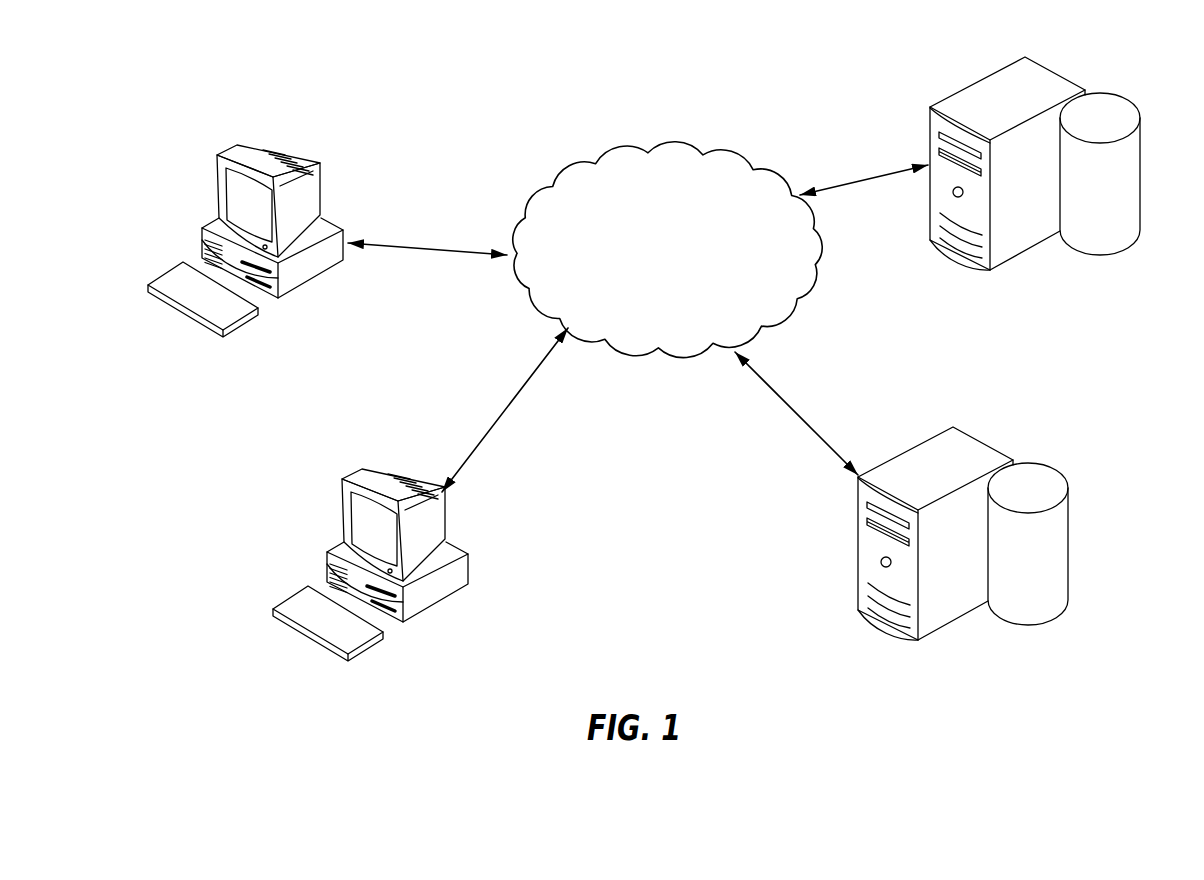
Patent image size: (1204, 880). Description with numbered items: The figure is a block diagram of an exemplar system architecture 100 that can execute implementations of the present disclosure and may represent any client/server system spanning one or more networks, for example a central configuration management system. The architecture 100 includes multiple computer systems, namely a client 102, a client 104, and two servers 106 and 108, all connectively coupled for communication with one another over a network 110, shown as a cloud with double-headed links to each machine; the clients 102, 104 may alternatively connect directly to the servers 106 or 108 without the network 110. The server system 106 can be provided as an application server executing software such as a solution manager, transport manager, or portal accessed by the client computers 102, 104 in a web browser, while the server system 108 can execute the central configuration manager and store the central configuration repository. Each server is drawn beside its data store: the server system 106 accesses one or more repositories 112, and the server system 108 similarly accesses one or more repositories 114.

The system architecture 100 is at (465, 61).
The client 102 is at (320, 168).
The client 104 is at (468, 550).
The server system 106 is at (1027, 284).
The server system 108 is at (955, 654).
The network 110 is at (665, 143).
The repository 112 is at (1117, 93).
The repository 114 is at (1050, 463).